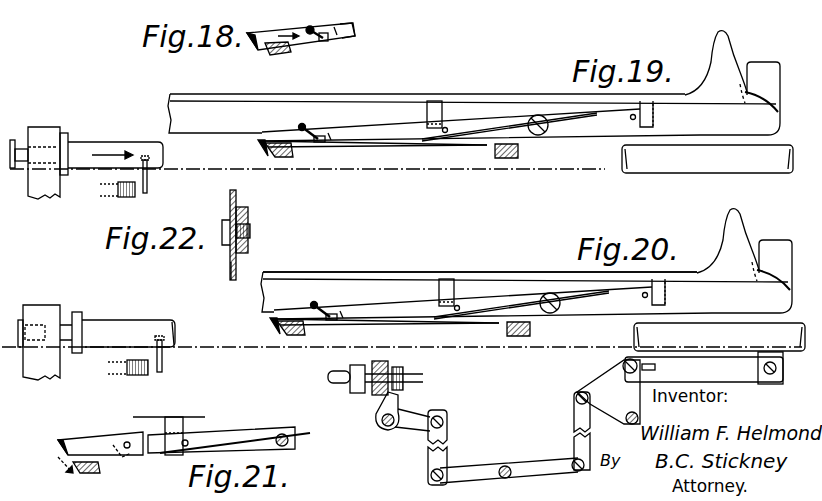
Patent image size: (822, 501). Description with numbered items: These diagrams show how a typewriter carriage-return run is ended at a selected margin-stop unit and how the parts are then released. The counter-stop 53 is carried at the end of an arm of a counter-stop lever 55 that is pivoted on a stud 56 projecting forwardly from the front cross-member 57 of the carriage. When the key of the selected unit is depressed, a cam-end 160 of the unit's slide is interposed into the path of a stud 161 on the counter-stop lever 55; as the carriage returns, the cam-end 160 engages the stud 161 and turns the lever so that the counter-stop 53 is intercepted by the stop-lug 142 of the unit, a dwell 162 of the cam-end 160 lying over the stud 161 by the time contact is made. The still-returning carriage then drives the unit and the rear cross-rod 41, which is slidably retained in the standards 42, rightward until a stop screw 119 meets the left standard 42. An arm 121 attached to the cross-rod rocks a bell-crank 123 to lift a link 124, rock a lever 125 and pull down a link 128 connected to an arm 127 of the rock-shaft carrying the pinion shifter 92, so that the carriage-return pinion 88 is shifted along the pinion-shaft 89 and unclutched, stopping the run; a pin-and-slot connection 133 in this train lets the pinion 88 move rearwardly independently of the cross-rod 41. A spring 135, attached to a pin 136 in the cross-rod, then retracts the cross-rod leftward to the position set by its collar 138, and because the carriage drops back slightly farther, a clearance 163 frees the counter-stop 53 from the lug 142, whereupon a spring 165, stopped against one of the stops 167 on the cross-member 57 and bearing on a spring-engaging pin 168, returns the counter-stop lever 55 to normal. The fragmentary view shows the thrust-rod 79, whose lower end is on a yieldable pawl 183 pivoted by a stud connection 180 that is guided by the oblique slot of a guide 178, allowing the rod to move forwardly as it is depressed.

In FIG. 19, the rear cross-rod 41 is at (118, 141).
In FIG. 20, the rear cross-rod 41 is at (128, 333).
In FIG. 19, the standard 42 is at (37, 163).
In FIG. 20, the standard 42 is at (45, 342).
In FIG. 18, the counter-stop 53 is at (257, 32).
In FIG. 19, the counter-stop 53 is at (258, 142).
In FIG. 20, the counter-stop 53 is at (270, 319).
In FIG. 21, the counter-stop 53 is at (58, 446).
In FIG. 18, the counter-stop lever 55 is at (354, 28).
In FIG. 19, the counter-stop lever 55 is at (473, 146).
In FIG. 20, the counter-stop lever 55 is at (473, 323).
In FIG. 21, the counter-stop lever 55 is at (266, 422).
In FIG. 19, the stud 56 is at (548, 110).
In FIG. 20, the front cross-member 57 is at (410, 272).
In FIG. 21, the front cross-member 57 is at (175, 416).
In FIG. 22, the thrust-rod 79 is at (237, 193).
In FIG. 20, the carriage-return pinion 88 is at (385, 362).
In FIG. 20, the pinion-shaft 89 is at (418, 378).
In FIG. 20, the pinion shifter 92 is at (382, 406).
In FIG. 19, the stop screw 119 is at (12, 139).
In FIG. 20, the arm 121 is at (704, 368).
In FIG. 20, the bell-crank 123 is at (621, 390).
In FIG. 20, the link 124 is at (573, 404).
In FIG. 20, the lever 125 is at (478, 462).
In FIG. 20, the arm 127 is at (419, 412).
In FIG. 20, the link 128 is at (448, 428).
In FIG. 20, the pin-and-slot connection 133 is at (655, 367).
In FIG. 19, the spring 135 is at (104, 186).
In FIG. 20, the spring 135 is at (112, 366).
In FIG. 19, the pin 136 is at (148, 184).
In FIG. 20, the pin 136 is at (159, 354).
In FIG. 19, the collar 138 is at (64, 132).
In FIG. 20, the collar 138 is at (78, 312).
In FIG. 18, the stop-lug 142 is at (276, 53).
In FIG. 19, the stop-lug 142 is at (279, 150).
In FIG. 20, the stop-lug 142 is at (291, 337).
In FIG. 21, the stop-lug 142 is at (98, 474).
In FIG. 18, the cam-end 160 is at (308, 27).
In FIG. 19, the cam-end 160 is at (305, 126).
In FIG. 20, the cam-end 160 is at (326, 303).
In FIG. 21, the cam-end 160 is at (131, 458).
In FIG. 18, the stud 161 is at (318, 42).
In FIG. 19, the stud 161 is at (318, 143).
In FIG. 20, the stud 161 is at (330, 321).
In FIG. 21, the stud 161 is at (128, 442).
In FIG. 18, the dwell 162 is at (329, 40).
In FIG. 19, the dwell 162 is at (332, 142).
In FIG. 21, the clearance 163 is at (63, 476).
In FIG. 21, the spring 165 is at (228, 432).
In FIG. 19, the stops 167 is at (434, 100).
In FIG. 19, the spring-engaging pins 168 is at (448, 120).
In FIG. 21, the spring-engaging pins 168 is at (187, 440).
In FIG. 22, the guide 178 is at (243, 218).
In FIG. 22, the stud connection 180 is at (251, 232).
In FIG. 22, the by-pass pawl 183 is at (230, 262).